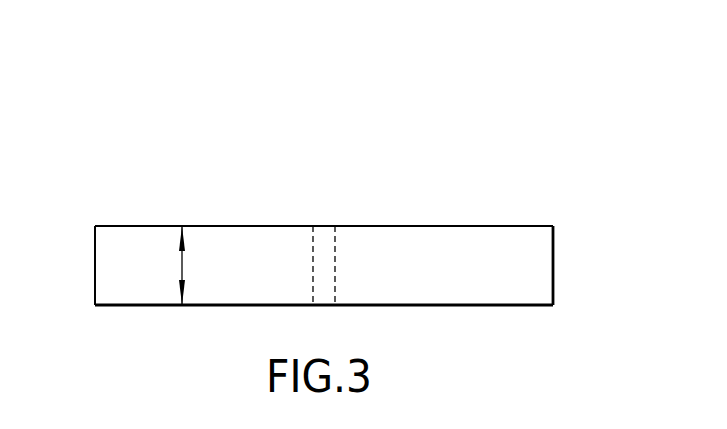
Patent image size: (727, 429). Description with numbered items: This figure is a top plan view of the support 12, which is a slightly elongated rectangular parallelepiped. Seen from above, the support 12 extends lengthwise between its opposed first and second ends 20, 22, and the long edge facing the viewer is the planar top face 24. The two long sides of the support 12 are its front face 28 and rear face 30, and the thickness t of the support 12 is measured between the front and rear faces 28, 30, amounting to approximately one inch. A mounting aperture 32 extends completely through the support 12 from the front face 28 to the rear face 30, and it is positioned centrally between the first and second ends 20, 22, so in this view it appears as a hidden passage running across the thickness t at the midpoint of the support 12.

The support 12 is at (579, 185).
The first end 20 is at (95, 258).
The second end 22 is at (553, 283).
The planar top face 24 is at (390, 228).
The front face 28 is at (500, 225).
The rear face 30 is at (423, 308).
The mounting aperture 32 is at (311, 253).
The thickness t is at (181, 263).